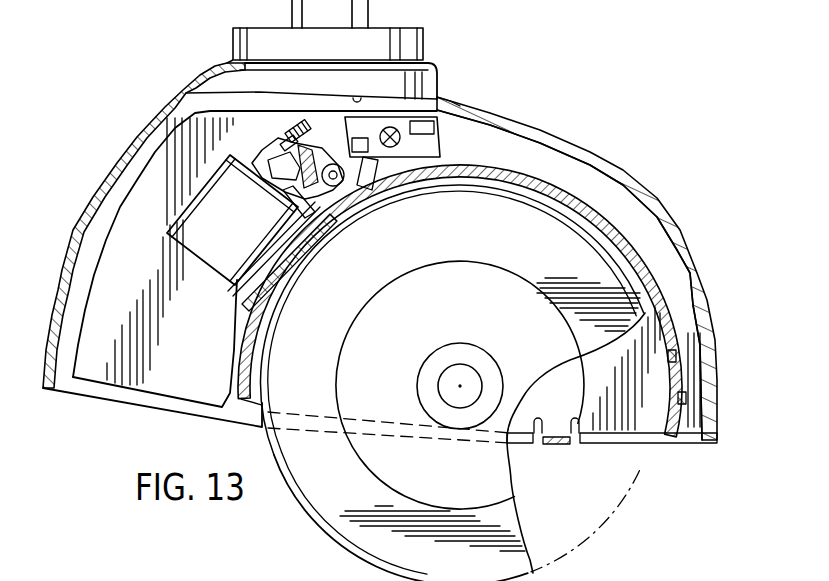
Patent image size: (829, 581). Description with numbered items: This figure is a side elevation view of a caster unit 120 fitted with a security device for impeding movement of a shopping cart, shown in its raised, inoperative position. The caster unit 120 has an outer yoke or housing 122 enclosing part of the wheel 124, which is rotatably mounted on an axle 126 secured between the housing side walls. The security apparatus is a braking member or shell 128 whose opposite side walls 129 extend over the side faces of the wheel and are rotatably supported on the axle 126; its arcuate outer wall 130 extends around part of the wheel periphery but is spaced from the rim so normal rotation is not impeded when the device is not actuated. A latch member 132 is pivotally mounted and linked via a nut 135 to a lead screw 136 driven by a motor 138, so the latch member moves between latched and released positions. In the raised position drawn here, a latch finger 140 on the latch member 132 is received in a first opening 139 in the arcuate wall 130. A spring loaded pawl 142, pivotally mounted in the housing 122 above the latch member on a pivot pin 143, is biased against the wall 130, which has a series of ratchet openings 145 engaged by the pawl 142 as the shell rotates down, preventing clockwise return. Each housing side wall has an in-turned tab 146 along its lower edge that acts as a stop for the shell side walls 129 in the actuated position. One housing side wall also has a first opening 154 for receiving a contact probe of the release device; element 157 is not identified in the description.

The caster unit 120 is at (670, 195).
The housing 122 is at (708, 304).
The wheel 124 is at (330, 523).
The axle 126 is at (458, 368).
The braking member or shell 128 is at (590, 205).
The shell side walls 129 is at (636, 418).
The arcuate outer wall 130 is at (513, 173).
The latch member 132 is at (320, 147).
The nut 135 is at (250, 153).
The lead screw 136 is at (290, 126).
The motor 138 is at (185, 246).
The first opening 139 is at (318, 222).
The latch finger 140 is at (356, 212).
The spring loaded pawl 142 is at (462, 106).
The pivot pin 143 is at (405, 143).
The ratchet openings 145 is at (683, 397).
The in-turned tab 146 is at (552, 447).
The first opening 154 is at (408, 188).
The base element 157 is at (726, 574).